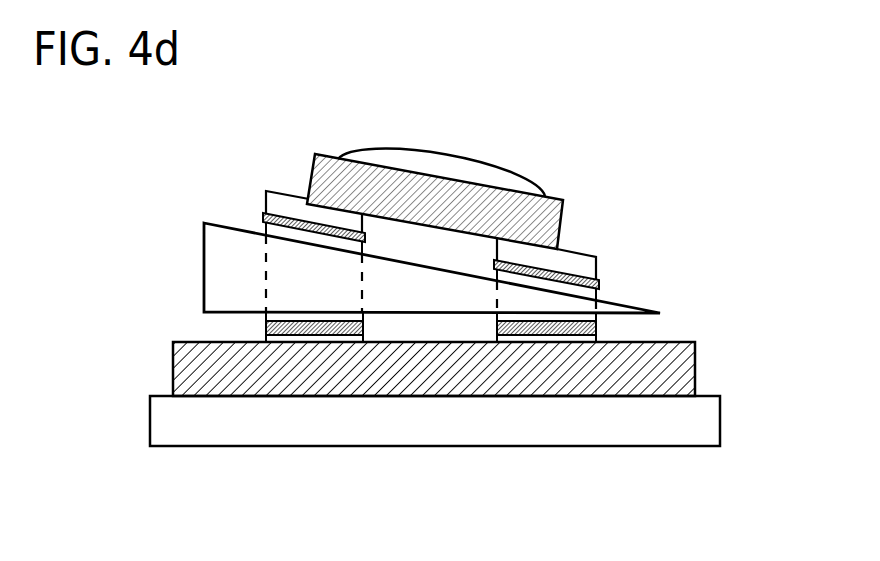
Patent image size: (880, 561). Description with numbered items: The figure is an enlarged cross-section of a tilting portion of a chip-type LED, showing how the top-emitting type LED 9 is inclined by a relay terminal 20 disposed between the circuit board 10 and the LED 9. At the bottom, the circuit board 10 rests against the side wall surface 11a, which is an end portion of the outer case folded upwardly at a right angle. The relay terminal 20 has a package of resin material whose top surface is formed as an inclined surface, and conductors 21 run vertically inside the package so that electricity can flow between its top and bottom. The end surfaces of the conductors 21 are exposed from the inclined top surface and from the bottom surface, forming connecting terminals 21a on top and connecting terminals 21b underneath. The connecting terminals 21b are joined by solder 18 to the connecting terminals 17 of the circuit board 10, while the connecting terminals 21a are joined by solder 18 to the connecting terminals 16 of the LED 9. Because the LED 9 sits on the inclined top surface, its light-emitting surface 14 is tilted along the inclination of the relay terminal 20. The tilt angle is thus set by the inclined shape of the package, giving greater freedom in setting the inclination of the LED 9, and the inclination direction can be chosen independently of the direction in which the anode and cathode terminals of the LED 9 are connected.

The top-emitting type LED 9 is at (544, 190).
The light-emitting surface 14 is at (437, 164).
The connecting terminals of the LED 16 is at (268, 189).
The solder 18 is at (266, 216).
The connecting terminal 21a is at (265, 229).
The conductors 21 is at (266, 268).
The relay terminal 20 is at (215, 286).
The connecting terminal 21b is at (266, 317).
The connecting terminals of the circuit board 17 is at (266, 339).
The circuit board 10 is at (697, 356).
The side wall surface 11a is at (428, 434).